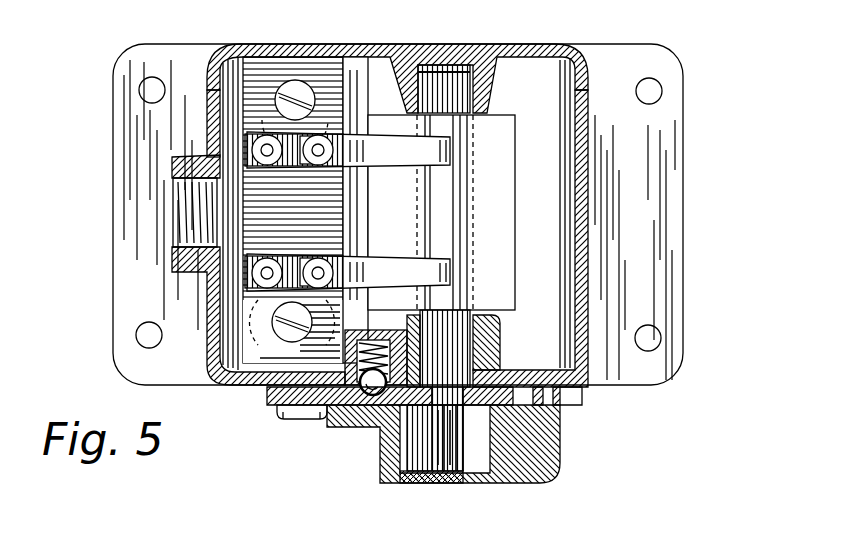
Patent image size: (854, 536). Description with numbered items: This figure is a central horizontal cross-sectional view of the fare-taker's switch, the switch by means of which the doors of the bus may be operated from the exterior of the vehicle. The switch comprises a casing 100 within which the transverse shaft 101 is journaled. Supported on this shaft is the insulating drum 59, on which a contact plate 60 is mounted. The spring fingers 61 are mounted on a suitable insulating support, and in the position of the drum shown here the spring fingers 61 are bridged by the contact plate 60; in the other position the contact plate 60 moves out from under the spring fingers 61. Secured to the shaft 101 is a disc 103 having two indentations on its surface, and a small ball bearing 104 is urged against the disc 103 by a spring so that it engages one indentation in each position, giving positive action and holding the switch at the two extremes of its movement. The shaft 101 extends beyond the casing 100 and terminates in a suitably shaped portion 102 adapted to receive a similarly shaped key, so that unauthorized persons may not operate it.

The insulating drum 59 is at (515, 221).
The contact plate 60 is at (448, 243).
The spring fingers 61 is at (398, 255).
The casing 100 is at (585, 372).
The transverse shaft 101 is at (470, 330).
The suitably shaped portion 102 is at (440, 484).
The disc 103 is at (350, 430).
The ball bearing 104 is at (325, 408).